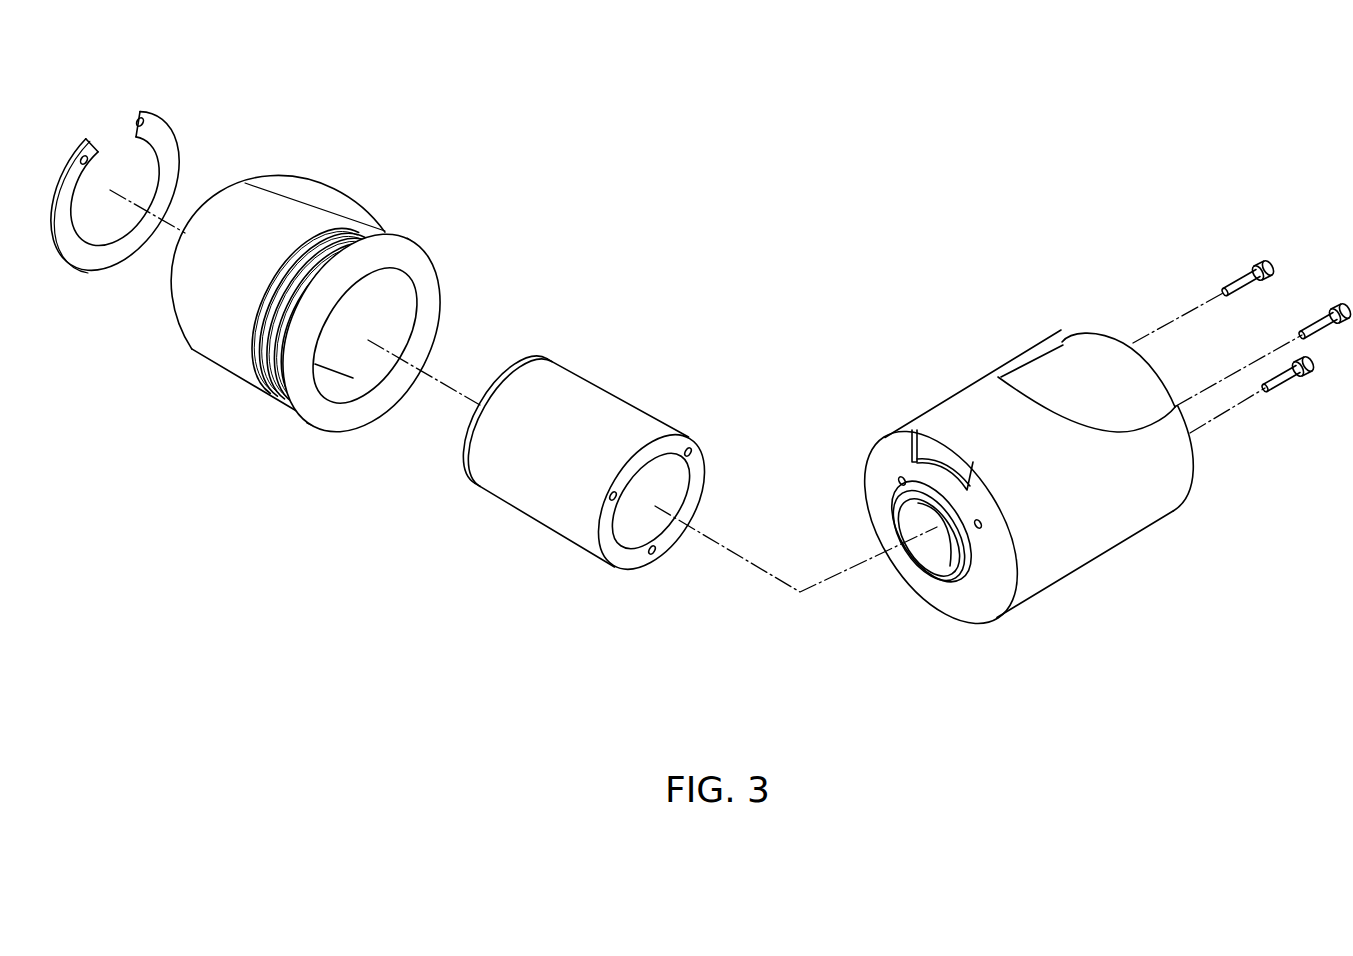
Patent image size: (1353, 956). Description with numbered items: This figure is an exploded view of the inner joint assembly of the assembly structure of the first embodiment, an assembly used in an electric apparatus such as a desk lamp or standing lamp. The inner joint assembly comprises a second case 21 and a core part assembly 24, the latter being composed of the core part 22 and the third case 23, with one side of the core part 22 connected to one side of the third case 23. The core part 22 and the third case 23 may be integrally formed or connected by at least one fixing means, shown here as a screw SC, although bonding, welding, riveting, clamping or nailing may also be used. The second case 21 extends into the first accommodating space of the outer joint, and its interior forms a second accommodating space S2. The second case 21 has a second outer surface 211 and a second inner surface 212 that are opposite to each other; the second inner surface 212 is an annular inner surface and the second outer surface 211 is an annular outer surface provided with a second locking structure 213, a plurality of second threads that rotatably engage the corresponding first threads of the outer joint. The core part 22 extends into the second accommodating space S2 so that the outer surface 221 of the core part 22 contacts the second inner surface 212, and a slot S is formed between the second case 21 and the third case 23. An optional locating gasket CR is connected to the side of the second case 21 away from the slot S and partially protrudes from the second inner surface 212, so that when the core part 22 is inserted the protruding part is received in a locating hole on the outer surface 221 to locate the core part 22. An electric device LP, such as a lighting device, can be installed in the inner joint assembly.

The second case 21 is at (350, 295).
The second outer surface 211 is at (267, 183).
The second inner surface 212 is at (400, 304).
The second locking structure 213 is at (378, 234).
The second accommodating space S2 is at (354, 382).
The core part 22 is at (574, 464).
The outer surface 221 is at (512, 492).
The third case 23 is at (1026, 459).
The core part assembly 24 is at (769, 91).
The locating gasket CR is at (163, 140).
The electric device LP is at (1066, 357).
The slot S is at (917, 432).
The screw SC is at (1246, 276).